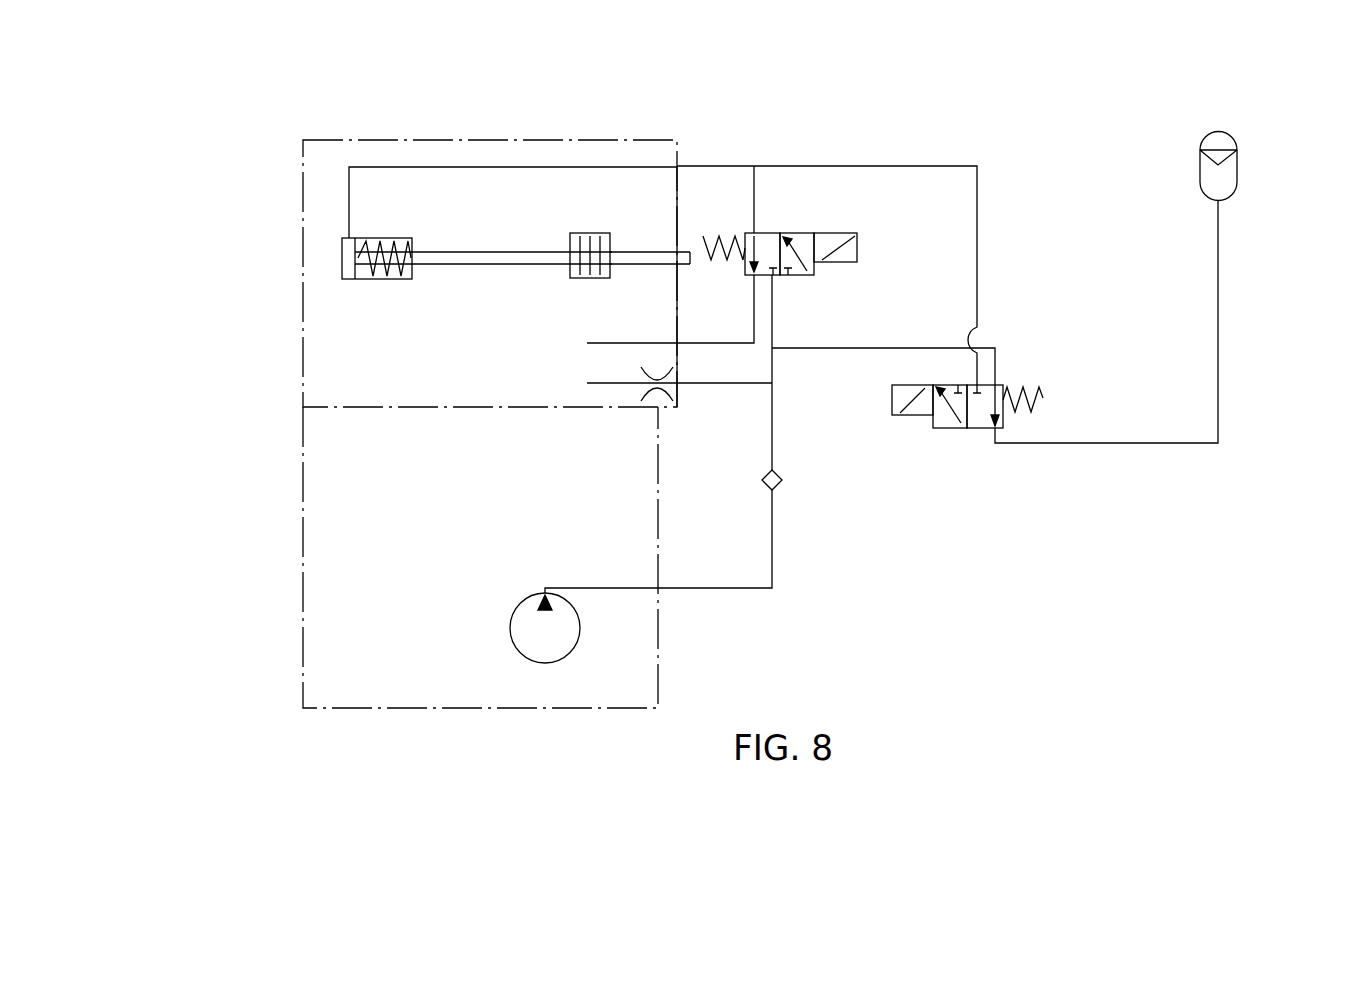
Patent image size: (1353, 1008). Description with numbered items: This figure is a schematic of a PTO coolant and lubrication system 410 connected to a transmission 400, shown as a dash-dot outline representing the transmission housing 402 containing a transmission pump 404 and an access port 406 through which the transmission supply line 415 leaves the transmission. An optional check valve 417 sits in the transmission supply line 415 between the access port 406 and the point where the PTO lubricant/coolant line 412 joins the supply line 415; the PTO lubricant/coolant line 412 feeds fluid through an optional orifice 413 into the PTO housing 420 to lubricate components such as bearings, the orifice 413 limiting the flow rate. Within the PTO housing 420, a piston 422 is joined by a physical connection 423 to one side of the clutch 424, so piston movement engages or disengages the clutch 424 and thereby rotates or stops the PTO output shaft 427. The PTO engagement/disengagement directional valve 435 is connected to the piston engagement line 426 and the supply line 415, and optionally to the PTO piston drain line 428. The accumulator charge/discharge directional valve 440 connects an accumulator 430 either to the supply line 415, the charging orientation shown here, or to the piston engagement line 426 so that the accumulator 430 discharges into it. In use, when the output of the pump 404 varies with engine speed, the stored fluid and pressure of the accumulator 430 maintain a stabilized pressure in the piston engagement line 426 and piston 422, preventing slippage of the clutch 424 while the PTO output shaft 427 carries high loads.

The transmission 400 is at (773, 430).
The transmission housing 402 is at (302, 523).
The transmission pump 404 is at (573, 653).
The access port 406 is at (672, 584).
The system 410 is at (993, 393).
The PTO lubricant/coolant line 412 is at (707, 383).
The orifice 413 is at (658, 388).
The transmission supply line 415 is at (722, 588).
The check valve 417 is at (782, 475).
The PTO housing 420 is at (302, 290).
The piston 422 is at (368, 278).
The physical connection 423 is at (473, 250).
The clutch 424 is at (583, 278).
The piston engagement line 426 is at (417, 167).
The PTO output shaft 427 is at (647, 265).
The PTO piston drain line 428 is at (600, 345).
The accumulator 430 is at (1233, 192).
The PTO engagement/disengagement directional valve 435 is at (832, 232).
The accumulator charge/discharge directional valve 440 is at (937, 428).